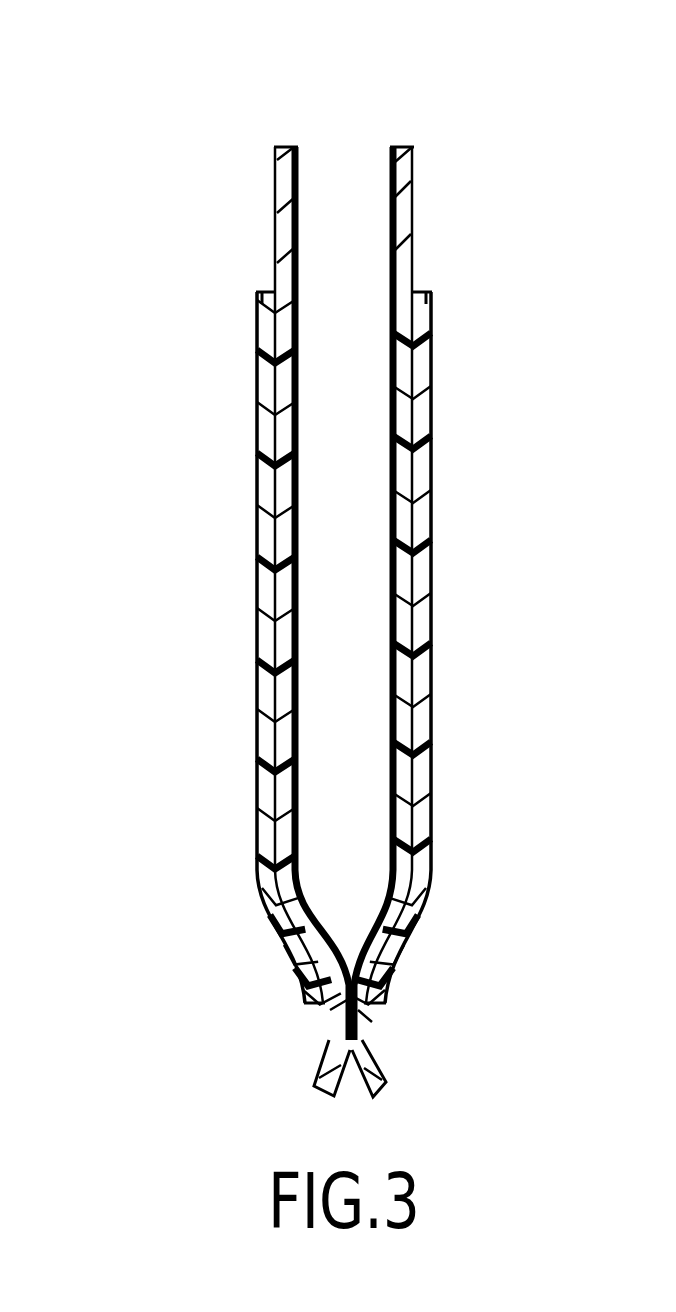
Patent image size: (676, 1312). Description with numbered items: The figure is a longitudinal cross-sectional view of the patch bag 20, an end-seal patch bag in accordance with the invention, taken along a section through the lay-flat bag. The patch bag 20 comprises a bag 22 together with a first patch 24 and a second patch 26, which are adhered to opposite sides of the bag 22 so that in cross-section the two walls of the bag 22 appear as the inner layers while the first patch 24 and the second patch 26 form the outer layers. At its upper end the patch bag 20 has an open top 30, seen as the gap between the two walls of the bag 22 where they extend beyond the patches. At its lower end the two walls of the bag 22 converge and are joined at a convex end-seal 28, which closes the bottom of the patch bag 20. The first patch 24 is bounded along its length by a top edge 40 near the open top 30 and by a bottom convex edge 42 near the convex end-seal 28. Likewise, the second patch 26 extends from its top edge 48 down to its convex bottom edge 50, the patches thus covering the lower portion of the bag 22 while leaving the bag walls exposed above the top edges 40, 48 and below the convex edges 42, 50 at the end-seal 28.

The patch bag 20 is at (152, 108).
The bag 22 is at (400, 428).
The first patch 24 is at (433, 512).
The second patch 26 is at (262, 440).
The convex end-seal 28 is at (353, 1030).
The open top 30 is at (365, 163).
The top edge 40 is at (424, 290).
The bottom convex edge 42 is at (382, 1003).
The top edge 48 is at (265, 290).
The convex bottom edge 50 is at (313, 1010).